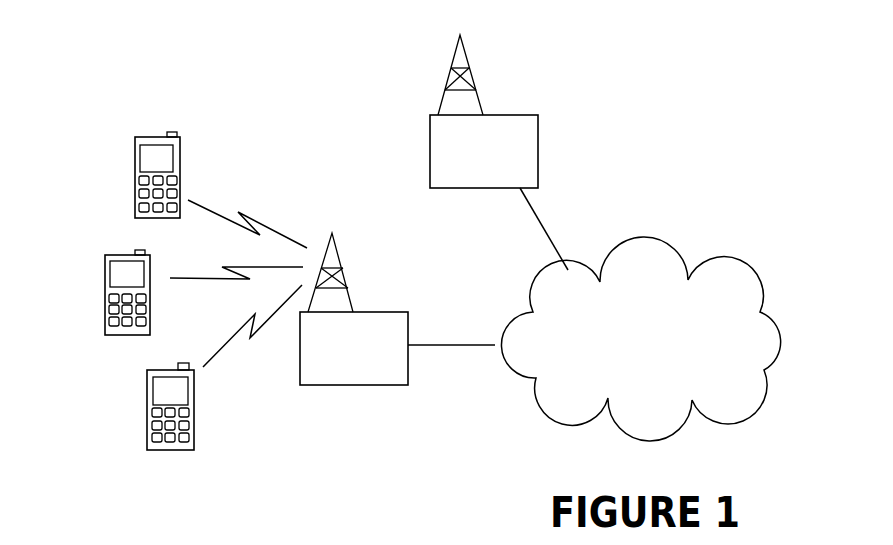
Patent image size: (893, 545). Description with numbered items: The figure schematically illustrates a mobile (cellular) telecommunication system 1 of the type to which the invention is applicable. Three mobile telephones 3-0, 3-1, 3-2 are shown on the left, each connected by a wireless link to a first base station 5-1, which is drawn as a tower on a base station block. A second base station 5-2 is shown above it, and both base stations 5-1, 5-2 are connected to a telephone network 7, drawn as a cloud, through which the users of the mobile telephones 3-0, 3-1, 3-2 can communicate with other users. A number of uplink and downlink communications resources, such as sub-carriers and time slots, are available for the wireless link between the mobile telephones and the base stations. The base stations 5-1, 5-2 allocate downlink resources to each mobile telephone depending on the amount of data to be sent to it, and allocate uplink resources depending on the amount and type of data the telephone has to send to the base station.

The mobile telecommunication system 1 is at (343, 483).
The mobile telephone 3-0 is at (135, 211).
The mobile telephone 3-1 is at (104, 323).
The mobile telephone 3-2 is at (146, 438).
The base station 5-1 is at (390, 308).
The base station 5-2 is at (545, 120).
The telephone network 7 is at (678, 255).